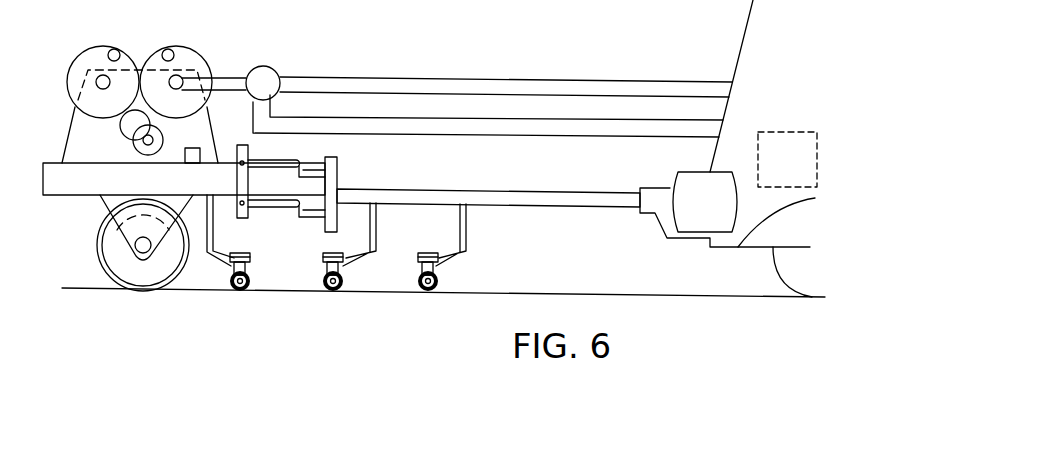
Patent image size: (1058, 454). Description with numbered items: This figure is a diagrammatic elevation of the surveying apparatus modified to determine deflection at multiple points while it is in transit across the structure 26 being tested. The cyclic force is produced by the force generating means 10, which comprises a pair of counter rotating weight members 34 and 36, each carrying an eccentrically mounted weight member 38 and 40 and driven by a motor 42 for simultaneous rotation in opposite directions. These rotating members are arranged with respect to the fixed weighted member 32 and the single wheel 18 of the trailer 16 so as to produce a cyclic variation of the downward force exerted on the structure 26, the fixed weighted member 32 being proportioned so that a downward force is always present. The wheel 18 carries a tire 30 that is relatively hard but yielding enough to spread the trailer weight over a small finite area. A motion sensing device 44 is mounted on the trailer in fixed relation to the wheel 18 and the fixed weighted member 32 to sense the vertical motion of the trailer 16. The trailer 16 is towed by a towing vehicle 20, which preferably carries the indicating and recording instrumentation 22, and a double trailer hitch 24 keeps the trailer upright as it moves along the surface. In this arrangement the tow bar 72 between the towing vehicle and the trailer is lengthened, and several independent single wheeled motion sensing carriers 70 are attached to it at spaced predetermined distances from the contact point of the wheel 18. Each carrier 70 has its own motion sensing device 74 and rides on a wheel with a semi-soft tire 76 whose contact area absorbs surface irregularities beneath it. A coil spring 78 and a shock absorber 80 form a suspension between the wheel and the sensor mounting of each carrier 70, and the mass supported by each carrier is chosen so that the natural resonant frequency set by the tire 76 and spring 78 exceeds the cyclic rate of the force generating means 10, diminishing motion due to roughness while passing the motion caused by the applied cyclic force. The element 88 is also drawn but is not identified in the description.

The force generating means 10 is at (61, 139).
The trailer 16 is at (166, 187).
The wheel 18 is at (98, 258).
The towing vehicle 20 is at (706, 170).
The indicating and recording instrumentation 22 is at (800, 131).
The double trailer hitch 24 is at (301, 161).
The structure 26 is at (557, 287).
The tire 30 is at (101, 232).
The fixed weighted member 32 is at (43, 183).
The counter rotating weight member 34 is at (78, 52).
The counter rotating weight member 36 is at (202, 49).
The eccentrically mounted weight member 38 is at (120, 49).
The eccentrically mounted weight member 40 is at (148, 50).
The motor 42 is at (133, 140).
The motion sensing device 44 is at (185, 148).
The single wheeled motion sensing carrier 70 is at (231, 282).
The tow bar 72 is at (214, 242).
The motion sensing device 74 is at (240, 253).
The semi-soft tire 76 is at (234, 290).
The coil spring 78 is at (247, 270).
The shock absorber 80 is at (250, 258).
The pulley 88 is at (275, 68).